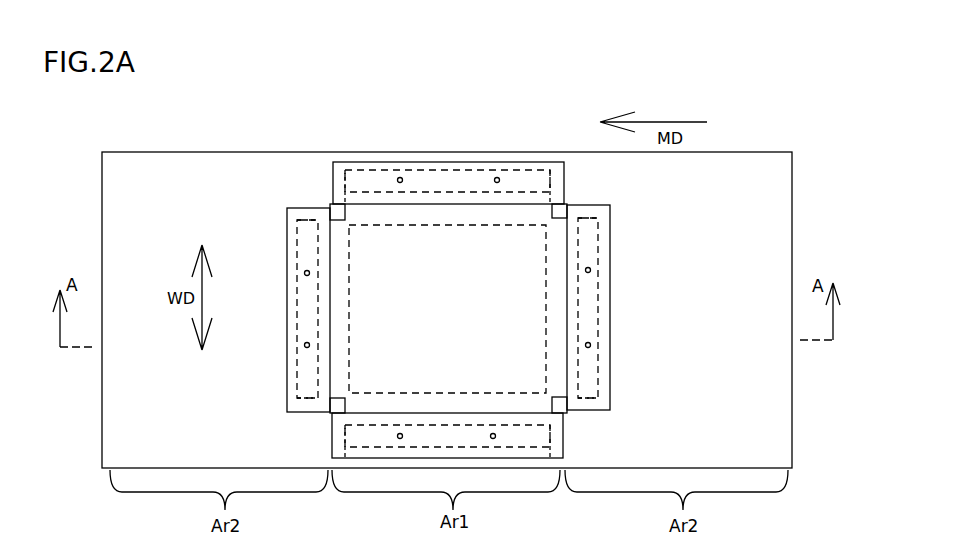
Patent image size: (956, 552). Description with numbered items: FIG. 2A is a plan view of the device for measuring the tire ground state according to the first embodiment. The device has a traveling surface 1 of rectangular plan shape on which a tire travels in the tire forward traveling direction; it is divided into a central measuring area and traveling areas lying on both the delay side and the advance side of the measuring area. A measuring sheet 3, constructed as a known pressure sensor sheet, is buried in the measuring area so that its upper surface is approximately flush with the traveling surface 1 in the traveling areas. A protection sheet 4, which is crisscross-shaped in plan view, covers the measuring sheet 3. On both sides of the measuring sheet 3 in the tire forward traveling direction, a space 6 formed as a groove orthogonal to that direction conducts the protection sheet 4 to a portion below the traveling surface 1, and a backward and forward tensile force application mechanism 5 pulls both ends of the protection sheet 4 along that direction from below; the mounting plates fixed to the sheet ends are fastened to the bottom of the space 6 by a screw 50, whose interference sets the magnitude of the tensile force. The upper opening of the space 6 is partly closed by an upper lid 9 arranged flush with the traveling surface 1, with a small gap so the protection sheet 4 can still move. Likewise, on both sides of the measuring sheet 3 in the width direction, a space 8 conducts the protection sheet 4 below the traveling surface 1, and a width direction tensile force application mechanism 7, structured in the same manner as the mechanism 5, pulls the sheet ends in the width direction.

The traveling surface 1 is at (751, 189).
The measuring sheet 3 is at (360, 273).
The protection sheet 4 is at (330, 213).
The backward and forward tensile force application mechanism 5 is at (296, 318).
The screw 50 is at (300, 350).
The space 6 is at (312, 408).
The width direction tensile force application mechanism 7 is at (333, 166).
The space 8 is at (572, 180).
The upper lid 9 is at (287, 265).